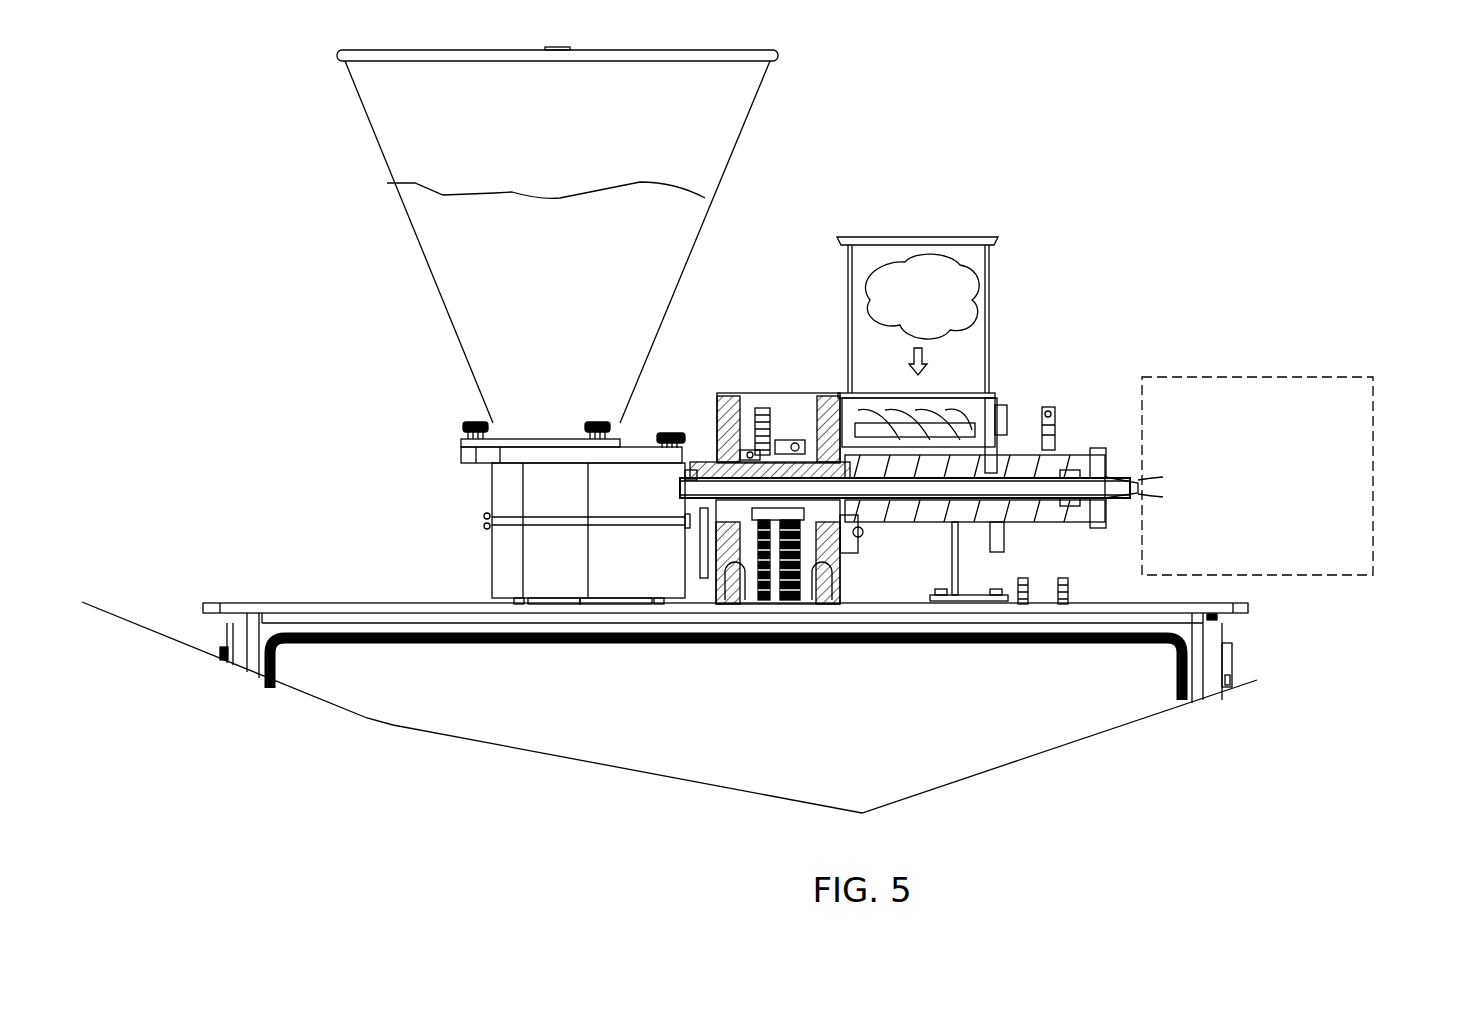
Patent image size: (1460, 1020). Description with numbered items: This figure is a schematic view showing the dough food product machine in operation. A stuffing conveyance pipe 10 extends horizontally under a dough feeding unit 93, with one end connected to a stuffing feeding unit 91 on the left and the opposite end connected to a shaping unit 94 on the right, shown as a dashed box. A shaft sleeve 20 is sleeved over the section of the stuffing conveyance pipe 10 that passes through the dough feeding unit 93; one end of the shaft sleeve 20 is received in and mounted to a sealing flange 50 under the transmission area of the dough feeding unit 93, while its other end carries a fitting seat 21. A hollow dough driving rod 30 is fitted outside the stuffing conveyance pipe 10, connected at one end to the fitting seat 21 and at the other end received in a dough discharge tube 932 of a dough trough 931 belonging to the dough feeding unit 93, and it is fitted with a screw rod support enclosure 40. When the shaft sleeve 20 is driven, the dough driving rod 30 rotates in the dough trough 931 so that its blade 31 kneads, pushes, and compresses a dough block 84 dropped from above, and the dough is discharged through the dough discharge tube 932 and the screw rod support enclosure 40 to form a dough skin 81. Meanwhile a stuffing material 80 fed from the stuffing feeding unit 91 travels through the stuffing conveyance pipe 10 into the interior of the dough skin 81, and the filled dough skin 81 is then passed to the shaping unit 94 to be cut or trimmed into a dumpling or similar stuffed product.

The stuffing conveyance pipe 10 is at (967, 487).
The shaft sleeve 20 is at (735, 520).
The fitting seat 21 is at (818, 520).
The dough driving rod 30 is at (895, 493).
The blade 31 is at (920, 518).
The screw rod support enclosure 40 is at (1087, 530).
The sealing flange 50 is at (693, 446).
The stuffing material 80 is at (433, 278).
The dough skin 81 is at (1153, 480).
The dough block 84 is at (870, 303).
The stuffing feeding unit 91 is at (430, 470).
The dough feeding unit 93 is at (939, 472).
The dough trough 931 is at (1003, 412).
The dough discharge tube 932 is at (1027, 527).
The shaping unit 94 is at (1375, 430).